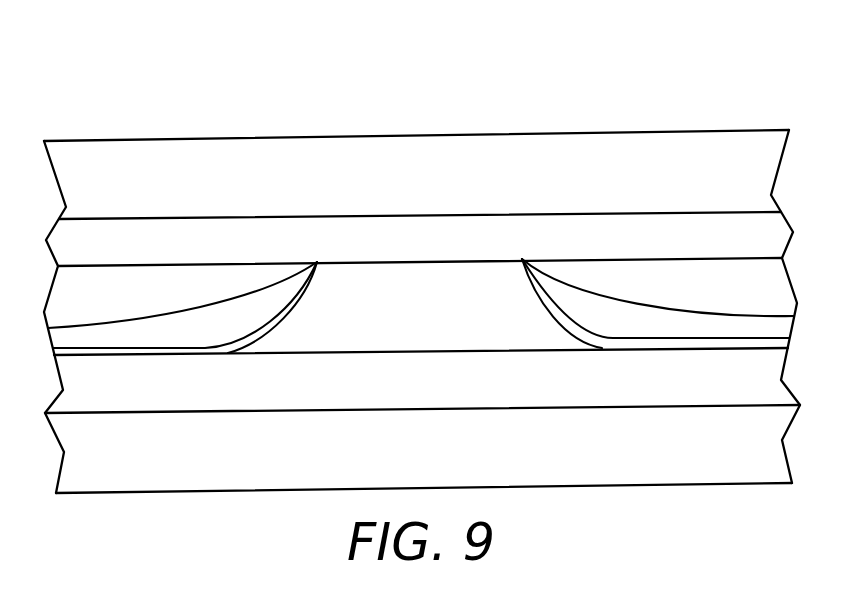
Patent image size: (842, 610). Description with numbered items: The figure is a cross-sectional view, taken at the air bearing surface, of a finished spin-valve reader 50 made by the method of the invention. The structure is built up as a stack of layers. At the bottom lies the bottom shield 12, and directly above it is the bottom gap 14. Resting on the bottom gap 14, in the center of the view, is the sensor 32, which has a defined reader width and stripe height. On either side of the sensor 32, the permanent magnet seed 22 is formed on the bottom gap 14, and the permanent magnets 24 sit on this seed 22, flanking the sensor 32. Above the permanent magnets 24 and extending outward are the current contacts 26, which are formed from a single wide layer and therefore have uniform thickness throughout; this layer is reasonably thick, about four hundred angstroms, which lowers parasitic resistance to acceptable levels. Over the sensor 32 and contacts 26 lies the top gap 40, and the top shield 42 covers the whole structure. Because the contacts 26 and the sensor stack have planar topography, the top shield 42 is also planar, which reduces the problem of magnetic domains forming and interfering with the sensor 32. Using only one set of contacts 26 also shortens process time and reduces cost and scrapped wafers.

The SV reader 50 is at (598, 112).
The top shield 42 is at (431, 181).
The top gap 40 is at (431, 251).
The sensor 32 is at (431, 326).
The current contacts 26 is at (130, 299).
The permanent magnets 24 is at (181, 337).
The permanent magnet seed 22 is at (235, 347).
The bottom gap 14 is at (431, 396).
The bottom shield 12 is at (431, 462).